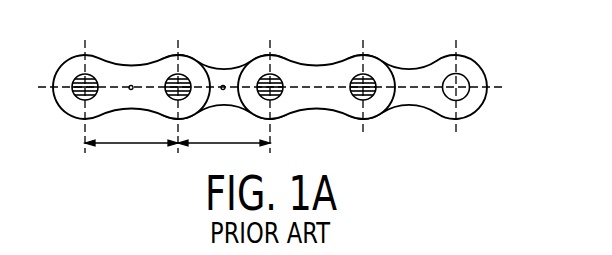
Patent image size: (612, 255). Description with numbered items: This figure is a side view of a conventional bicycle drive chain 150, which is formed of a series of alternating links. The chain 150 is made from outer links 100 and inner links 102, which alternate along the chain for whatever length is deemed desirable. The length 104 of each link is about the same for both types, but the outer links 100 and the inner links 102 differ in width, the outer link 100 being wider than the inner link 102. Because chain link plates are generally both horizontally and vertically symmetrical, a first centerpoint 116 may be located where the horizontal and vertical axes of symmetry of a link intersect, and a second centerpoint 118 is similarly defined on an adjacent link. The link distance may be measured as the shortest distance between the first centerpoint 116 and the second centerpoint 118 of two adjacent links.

The outer link 100 is at (132, 72).
The inner link 102 is at (223, 72).
The length 104 is at (177, 129).
The first centerpoint 116 is at (129, 89).
The second centerpoint 118 is at (224, 89).
The chain 150 is at (510, 68).